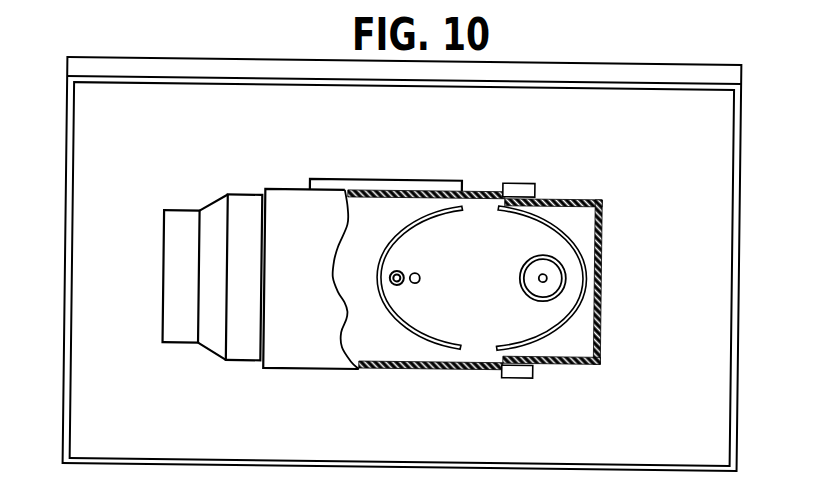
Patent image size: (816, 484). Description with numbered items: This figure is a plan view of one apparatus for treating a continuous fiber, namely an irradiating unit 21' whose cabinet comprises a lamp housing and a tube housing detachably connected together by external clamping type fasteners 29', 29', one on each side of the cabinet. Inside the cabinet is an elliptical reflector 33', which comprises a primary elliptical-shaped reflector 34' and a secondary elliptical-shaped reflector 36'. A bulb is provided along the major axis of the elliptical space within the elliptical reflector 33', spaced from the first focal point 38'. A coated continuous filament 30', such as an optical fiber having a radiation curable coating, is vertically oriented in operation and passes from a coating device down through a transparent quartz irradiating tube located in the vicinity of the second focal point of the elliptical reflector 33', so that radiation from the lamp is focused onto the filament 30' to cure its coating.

The irradiating unit 21' is at (312, 273).
The external clamping type fasteners 29' is at (573, 275).
The coated continuous filament 30' is at (534, 264).
The elliptical reflector 33' is at (443, 280).
The primary elliptical-shaped reflector 34' is at (474, 284).
The secondary elliptical-shaped reflector 36' is at (542, 286).
The first focal point 38' is at (389, 243).